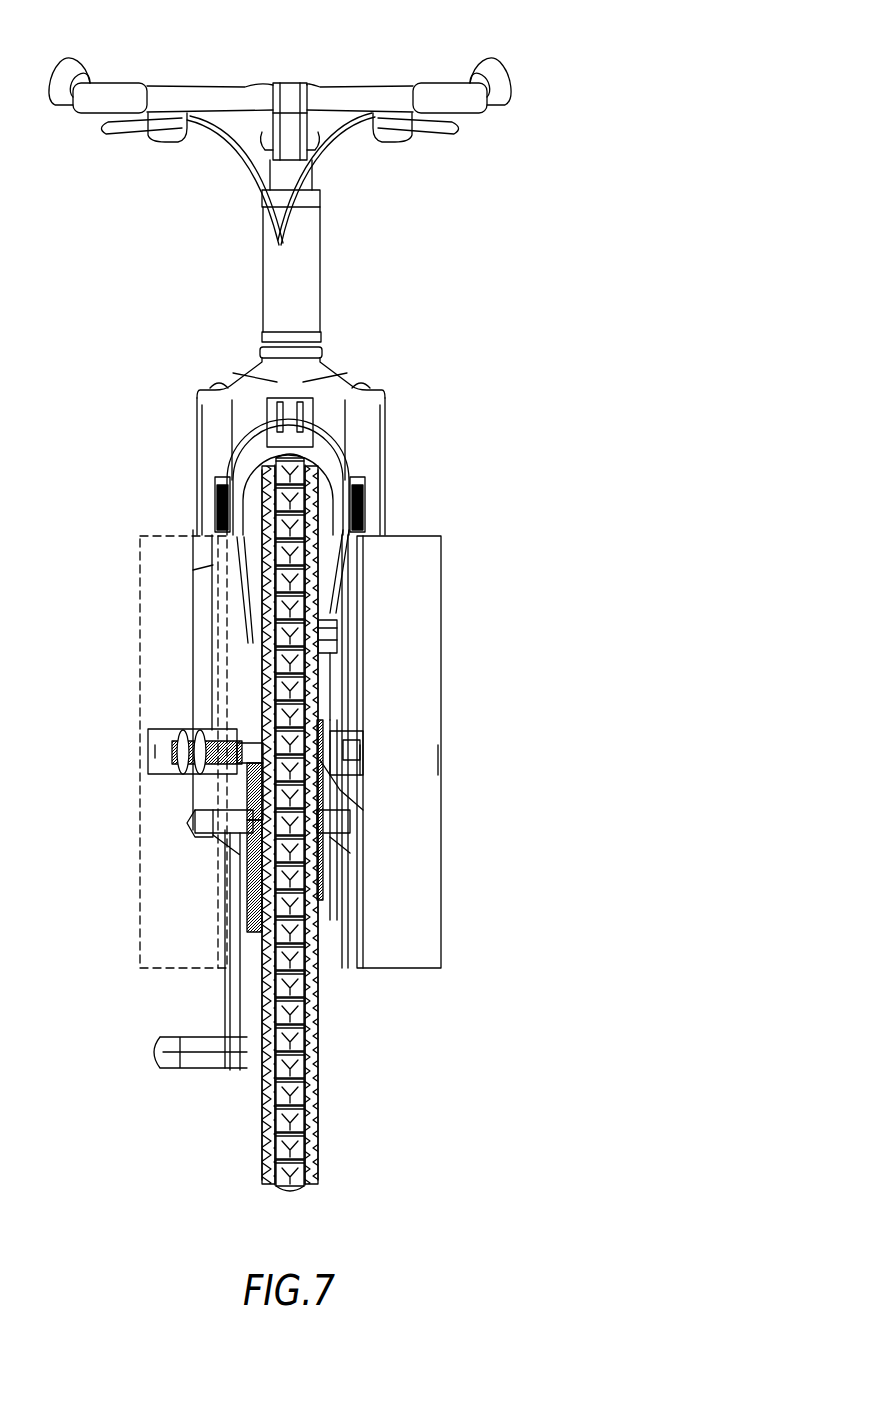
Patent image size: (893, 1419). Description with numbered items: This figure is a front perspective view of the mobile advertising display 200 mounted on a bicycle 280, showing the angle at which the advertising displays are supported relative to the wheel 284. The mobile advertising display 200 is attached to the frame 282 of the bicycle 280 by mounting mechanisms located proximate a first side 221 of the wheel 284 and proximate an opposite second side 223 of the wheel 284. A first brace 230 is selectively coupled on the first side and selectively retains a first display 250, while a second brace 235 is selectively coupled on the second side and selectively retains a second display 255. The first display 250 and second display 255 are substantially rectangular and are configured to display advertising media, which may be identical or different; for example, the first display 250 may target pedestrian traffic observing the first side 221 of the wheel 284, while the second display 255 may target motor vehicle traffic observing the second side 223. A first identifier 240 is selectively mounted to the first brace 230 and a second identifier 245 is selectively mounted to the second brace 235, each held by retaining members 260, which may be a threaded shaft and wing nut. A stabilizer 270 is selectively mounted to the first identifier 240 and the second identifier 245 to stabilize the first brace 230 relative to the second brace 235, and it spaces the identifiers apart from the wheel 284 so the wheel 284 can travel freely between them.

The bicycle 280 is at (337, 36).
The mobile advertising display 200 is at (495, 462).
The stabilizer 270 is at (322, 420).
The frame 282 is at (374, 440).
The first identifier 240 is at (227, 482).
The second identifier 245 is at (355, 482).
The first display 250 is at (156, 534).
The second display 255 is at (432, 534).
The retaining members 260 is at (370, 760).
The first brace 230 is at (166, 730).
The second brace 235 is at (350, 770).
The wheel 284 is at (295, 1047).
The first side 221 is at (262, 1177).
The second side 223 is at (318, 1177).